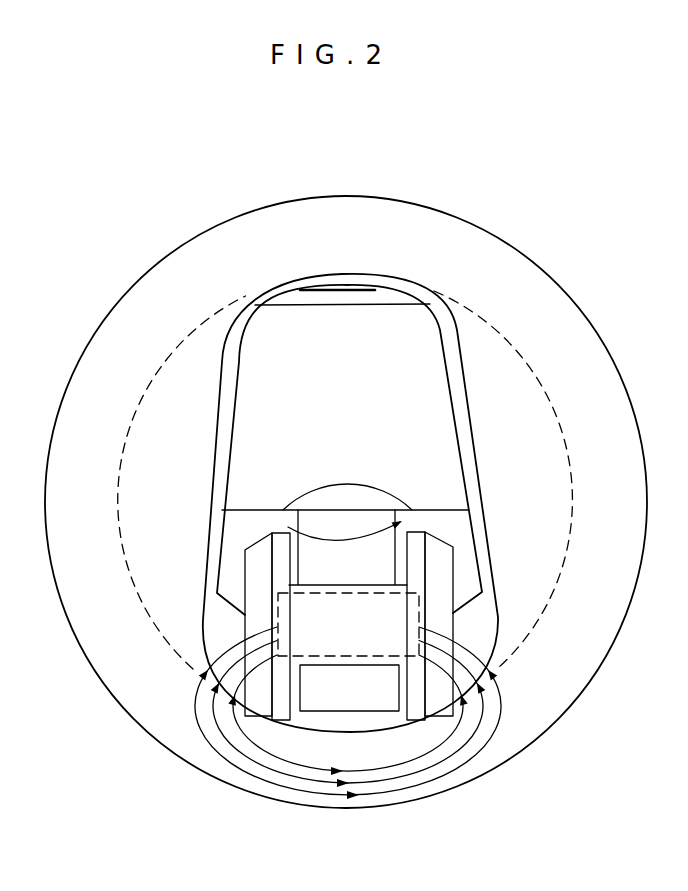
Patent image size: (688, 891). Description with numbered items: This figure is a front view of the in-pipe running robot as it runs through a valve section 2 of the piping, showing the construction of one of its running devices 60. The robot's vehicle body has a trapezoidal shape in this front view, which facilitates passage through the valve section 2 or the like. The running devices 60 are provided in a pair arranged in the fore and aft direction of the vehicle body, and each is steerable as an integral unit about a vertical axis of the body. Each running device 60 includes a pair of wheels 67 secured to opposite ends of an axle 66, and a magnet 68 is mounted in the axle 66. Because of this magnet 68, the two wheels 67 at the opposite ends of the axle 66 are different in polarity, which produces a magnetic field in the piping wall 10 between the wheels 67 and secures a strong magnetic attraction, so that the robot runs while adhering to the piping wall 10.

The valve section 2 is at (167, 417).
The piping wall 10 is at (548, 703).
The running device 60 is at (500, 518).
The axle 66 is at (318, 585).
The wheels 67 is at (250, 632).
The magnet 68 is at (280, 603).